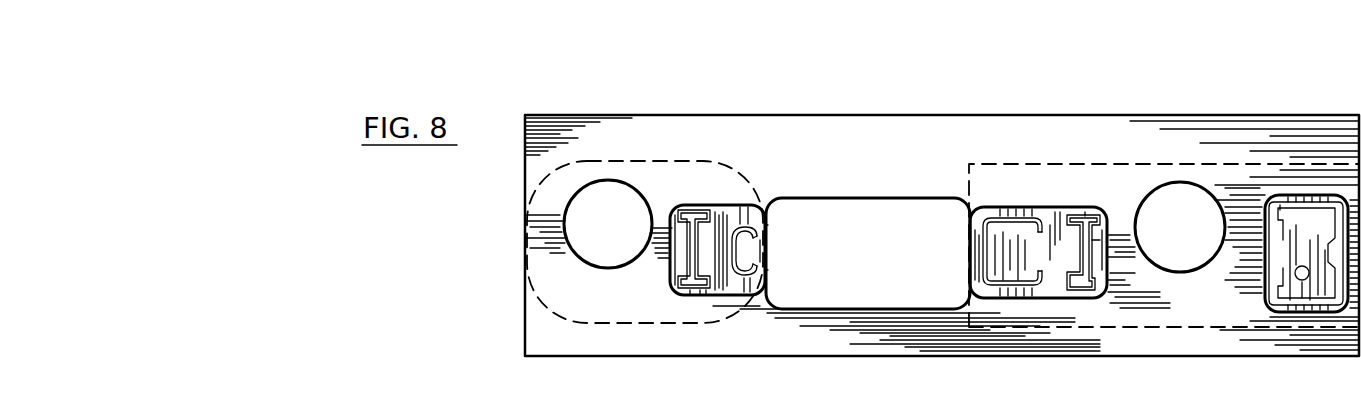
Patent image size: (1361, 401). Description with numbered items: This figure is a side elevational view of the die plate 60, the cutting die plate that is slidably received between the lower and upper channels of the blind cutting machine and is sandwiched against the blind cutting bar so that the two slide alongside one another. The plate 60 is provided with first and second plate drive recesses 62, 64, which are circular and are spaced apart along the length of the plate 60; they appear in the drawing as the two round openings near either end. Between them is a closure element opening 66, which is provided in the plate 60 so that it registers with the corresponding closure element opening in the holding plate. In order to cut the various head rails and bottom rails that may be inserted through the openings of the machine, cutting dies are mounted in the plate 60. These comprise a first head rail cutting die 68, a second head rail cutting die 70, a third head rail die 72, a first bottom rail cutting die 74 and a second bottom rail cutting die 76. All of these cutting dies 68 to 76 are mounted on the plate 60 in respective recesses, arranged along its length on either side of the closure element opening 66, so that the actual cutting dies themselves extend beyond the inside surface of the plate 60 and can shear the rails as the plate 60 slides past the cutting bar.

The die plate 60 is at (867, 132).
The first plate drive recess 62 is at (1163, 205).
The second plate drive recess 64 is at (602, 204).
The closure element opening 66 is at (906, 250).
The first head rail cutting die 68 is at (1288, 197).
The second head rail cutting die 70 is at (1098, 234).
The third head rail die 72 is at (1002, 223).
The first bottom rail cutting die 74 is at (760, 235).
The second bottom rail cutting die 76 is at (694, 212).